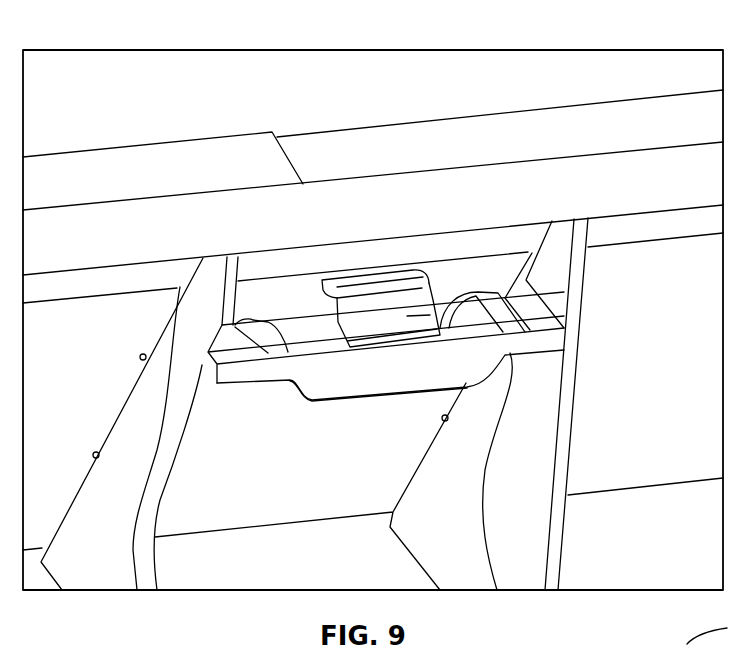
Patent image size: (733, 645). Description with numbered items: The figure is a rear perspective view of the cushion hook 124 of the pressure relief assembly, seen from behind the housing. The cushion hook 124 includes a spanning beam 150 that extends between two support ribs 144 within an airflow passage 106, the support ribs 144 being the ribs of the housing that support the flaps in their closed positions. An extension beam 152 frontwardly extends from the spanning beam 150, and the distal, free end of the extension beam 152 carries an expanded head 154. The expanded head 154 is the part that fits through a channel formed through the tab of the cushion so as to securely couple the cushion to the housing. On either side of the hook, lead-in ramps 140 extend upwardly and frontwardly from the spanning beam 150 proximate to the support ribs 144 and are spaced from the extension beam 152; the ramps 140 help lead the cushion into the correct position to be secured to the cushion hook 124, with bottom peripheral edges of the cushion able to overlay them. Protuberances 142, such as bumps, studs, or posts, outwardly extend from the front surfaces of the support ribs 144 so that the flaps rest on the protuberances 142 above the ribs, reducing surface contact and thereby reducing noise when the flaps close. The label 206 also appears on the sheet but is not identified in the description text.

The airflow opening 106 is at (387, 425).
The cushion hook 124 is at (363, 380).
The lead-in ramp 140 is at (492, 293).
The protuberance 142 is at (140, 357).
The support rib 144 is at (127, 453).
The spanning beam 150 is at (300, 386).
The extension beam 152 is at (430, 315).
The expanded head 154 is at (400, 283).
The trim panel 206 is at (611, 634).